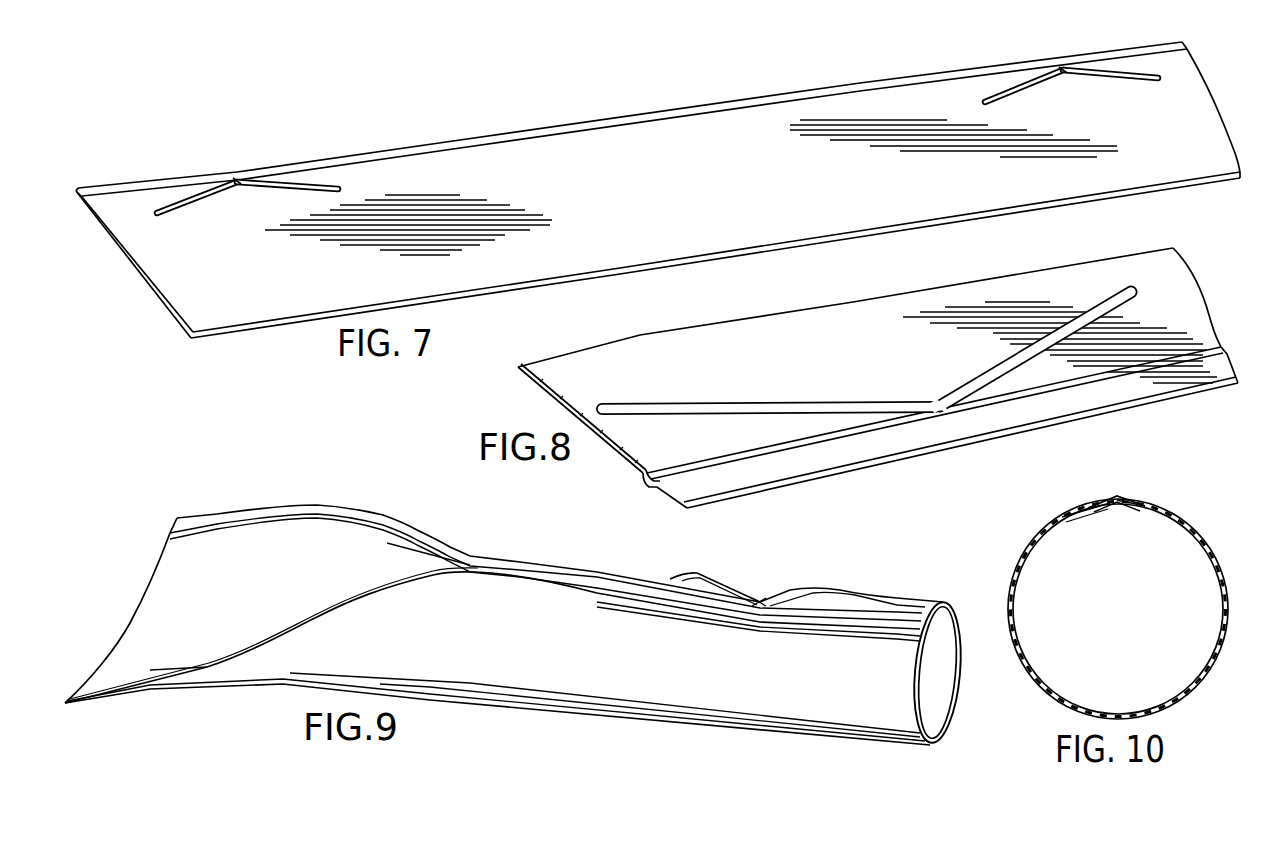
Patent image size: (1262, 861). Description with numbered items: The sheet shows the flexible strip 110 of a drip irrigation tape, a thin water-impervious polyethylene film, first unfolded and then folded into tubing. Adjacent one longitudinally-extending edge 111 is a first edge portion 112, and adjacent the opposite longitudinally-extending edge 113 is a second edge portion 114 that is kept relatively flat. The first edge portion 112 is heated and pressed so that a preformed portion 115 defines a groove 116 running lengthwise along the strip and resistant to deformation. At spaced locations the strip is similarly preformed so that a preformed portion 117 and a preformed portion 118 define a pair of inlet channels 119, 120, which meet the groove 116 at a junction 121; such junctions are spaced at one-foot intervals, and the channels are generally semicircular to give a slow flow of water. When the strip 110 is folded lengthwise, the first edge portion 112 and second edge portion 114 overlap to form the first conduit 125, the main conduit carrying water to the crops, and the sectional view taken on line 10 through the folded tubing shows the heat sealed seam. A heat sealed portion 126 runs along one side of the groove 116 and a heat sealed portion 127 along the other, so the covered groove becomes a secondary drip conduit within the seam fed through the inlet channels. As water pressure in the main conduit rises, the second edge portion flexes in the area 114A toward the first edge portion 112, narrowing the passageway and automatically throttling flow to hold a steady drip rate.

In FIG. 9, the section line 10 is at (883, 583).
In FIG. 7, the flexible strip 110 is at (461, 132).
In FIG. 9, the flexible strip 110 is at (610, 728).
In FIG. 10, the flexible strip 110 is at (1213, 678).
In FIG. 7, the longitudinally-extending edge 111 is at (153, 177).
In FIG. 8, the longitudinally-extending edge 111 is at (840, 472).
In FIG. 9, the longitudinally-extending edge 111 is at (297, 508).
In FIG. 10, the longitudinally-extending edge 111 is at (1145, 508).
In FIG. 7, the first edge portion 112 is at (598, 137).
In FIG. 8, the first edge portion 112 is at (643, 460).
In FIG. 9, the first edge portion 112 is at (168, 543).
In FIG. 10, the first edge portion 112 is at (1068, 511).
In FIG. 7, the longitudinally-extending edge 113 is at (620, 274).
In FIG. 9, the longitudinally-extending edge 113 is at (202, 673).
In FIG. 10, the longitudinally-extending edge 113 is at (1067, 530).
In FIG. 7, the second edge portion 114 is at (188, 317).
In FIG. 9, the second edge portion 114 is at (120, 680).
In FIG. 10, the second edge portion 114 is at (1090, 519).
In FIG. 10, the flexing area of second edge portion 114A is at (1118, 507).
In FIG. 7, the preformed portion 115 is at (83, 203).
In FIG. 8, the preformed portion 115 is at (647, 490).
In FIG. 9, the preformed portion 115 is at (608, 592).
In FIG. 10, the preformed portion 115 is at (1117, 496).
In FIG. 7, the groove 116 is at (690, 118).
In FIG. 8, the groove 116 is at (747, 458).
In FIG. 9, the groove 116 is at (243, 532).
In FIG. 10, the groove 116 is at (1126, 500).
In FIG. 9, the preformed portion 117 is at (716, 580).
In FIG. 9, the preformed portion 118 is at (813, 587).
In FIG. 7, the inlet channel 119 is at (178, 208).
In FIG. 8, the inlet channel 119 is at (990, 377).
In FIG. 7, the inlet channel 120 is at (280, 188).
In FIG. 8, the inlet channel 120 is at (737, 409).
In FIG. 7, the junction 121 is at (237, 178).
In FIG. 8, the junction 121 is at (942, 412).
In FIG. 9, the junction 121 is at (758, 607).
In FIG. 9, the first conduit 125 is at (940, 683).
In FIG. 10, the first conduit 125 is at (1134, 647).
In FIG. 10, the heat sealed portion 126 is at (1093, 505).
In FIG. 10, the heat sealed portion 127 is at (1133, 515).